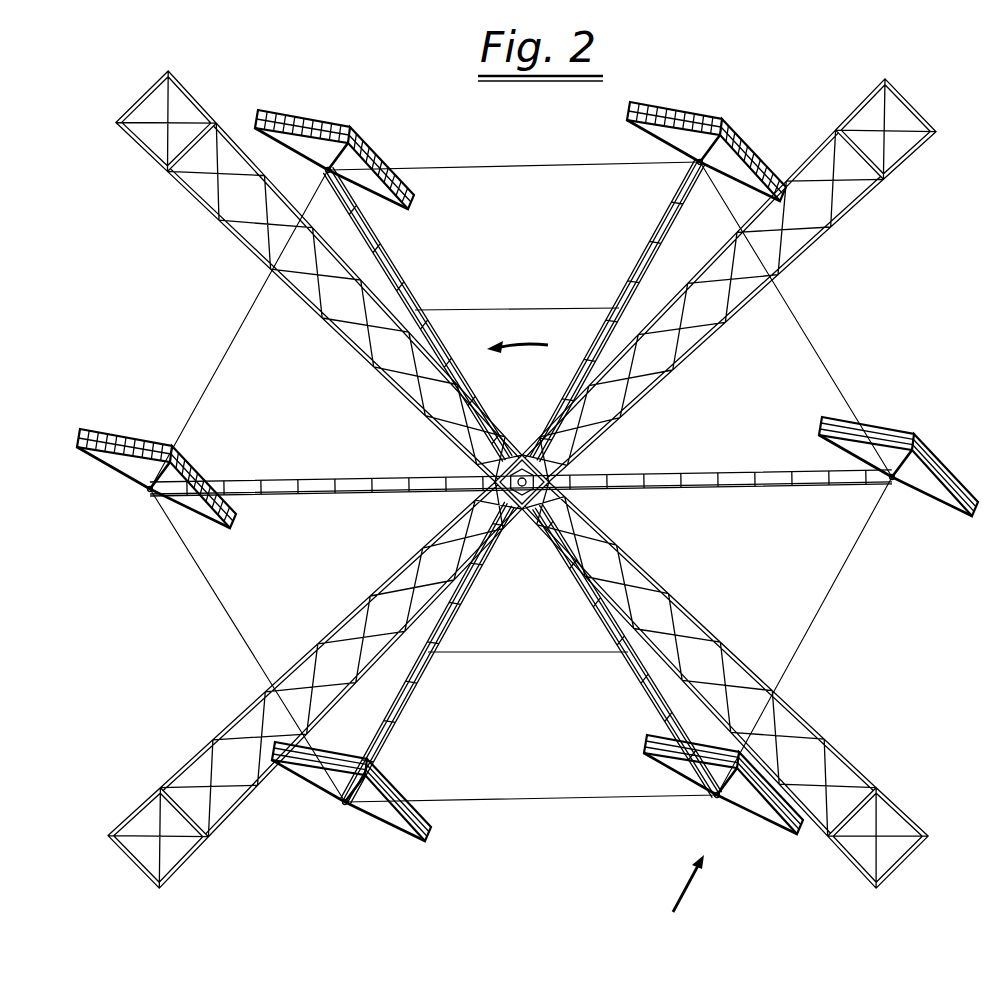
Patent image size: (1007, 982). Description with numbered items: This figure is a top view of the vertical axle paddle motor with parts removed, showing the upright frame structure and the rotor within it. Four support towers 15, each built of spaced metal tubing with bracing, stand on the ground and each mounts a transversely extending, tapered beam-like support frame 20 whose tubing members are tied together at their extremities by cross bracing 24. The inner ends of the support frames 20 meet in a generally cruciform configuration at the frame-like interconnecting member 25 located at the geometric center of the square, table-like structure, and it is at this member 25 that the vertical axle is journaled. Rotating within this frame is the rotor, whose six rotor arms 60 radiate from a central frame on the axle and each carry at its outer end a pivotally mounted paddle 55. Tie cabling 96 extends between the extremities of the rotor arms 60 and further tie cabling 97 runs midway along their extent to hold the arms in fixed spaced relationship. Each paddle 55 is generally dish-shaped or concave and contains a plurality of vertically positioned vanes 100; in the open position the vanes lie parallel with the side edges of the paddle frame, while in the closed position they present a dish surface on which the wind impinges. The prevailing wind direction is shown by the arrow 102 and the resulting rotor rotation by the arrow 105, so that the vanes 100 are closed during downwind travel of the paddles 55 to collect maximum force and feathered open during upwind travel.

The support tower 15 is at (916, 856).
The support frame 20 is at (692, 612).
The cross bracing 24 is at (573, 502).
The interconnecting member 25 is at (571, 468).
The paddle 55 is at (937, 452).
The rotor arm 60 is at (646, 247).
The tie cabling 96 is at (531, 166).
The tie cabling 97 is at (519, 309).
The vane 100 is at (716, 118).
The prevailing wind direction 102 is at (691, 882).
The rotor direction arrow 105 is at (512, 336).